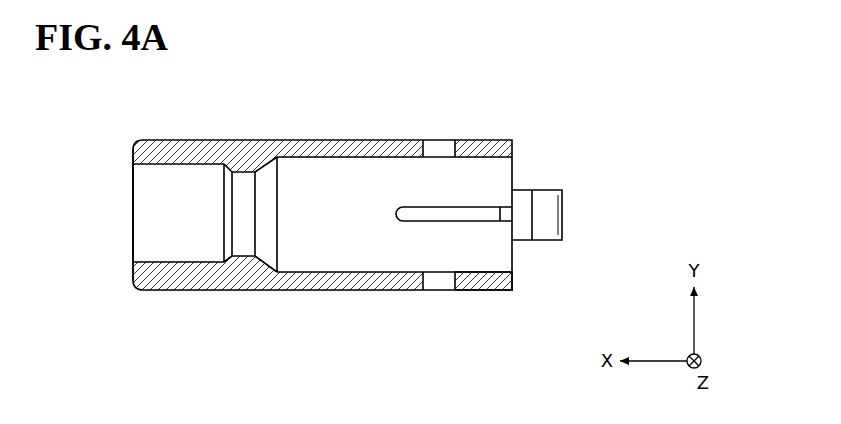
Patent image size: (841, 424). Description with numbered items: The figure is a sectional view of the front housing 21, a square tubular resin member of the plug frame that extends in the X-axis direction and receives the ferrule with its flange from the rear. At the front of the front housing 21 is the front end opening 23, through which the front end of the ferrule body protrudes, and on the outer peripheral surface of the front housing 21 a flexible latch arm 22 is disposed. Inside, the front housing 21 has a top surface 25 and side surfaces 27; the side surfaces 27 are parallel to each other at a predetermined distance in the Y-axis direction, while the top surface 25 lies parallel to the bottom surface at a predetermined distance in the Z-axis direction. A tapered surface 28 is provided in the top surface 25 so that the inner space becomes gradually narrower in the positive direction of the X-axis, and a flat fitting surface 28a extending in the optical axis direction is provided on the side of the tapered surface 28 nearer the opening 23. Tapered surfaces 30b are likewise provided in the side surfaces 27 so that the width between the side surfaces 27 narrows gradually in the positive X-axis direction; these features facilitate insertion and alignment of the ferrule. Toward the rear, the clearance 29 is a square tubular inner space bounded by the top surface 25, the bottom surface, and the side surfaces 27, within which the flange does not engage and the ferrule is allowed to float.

The front housing 21 is at (133, 143).
The flexible latch arm 22 is at (547, 195).
The front end opening 23 is at (133, 216).
The top surface 25 is at (473, 257).
The side surfaces 27 is at (394, 160).
The tapered surface 28 is at (265, 218).
The flat fitting surface 28a is at (247, 228).
The clearance 29 is at (318, 186).
The tapered surfaces 30b is at (257, 167).